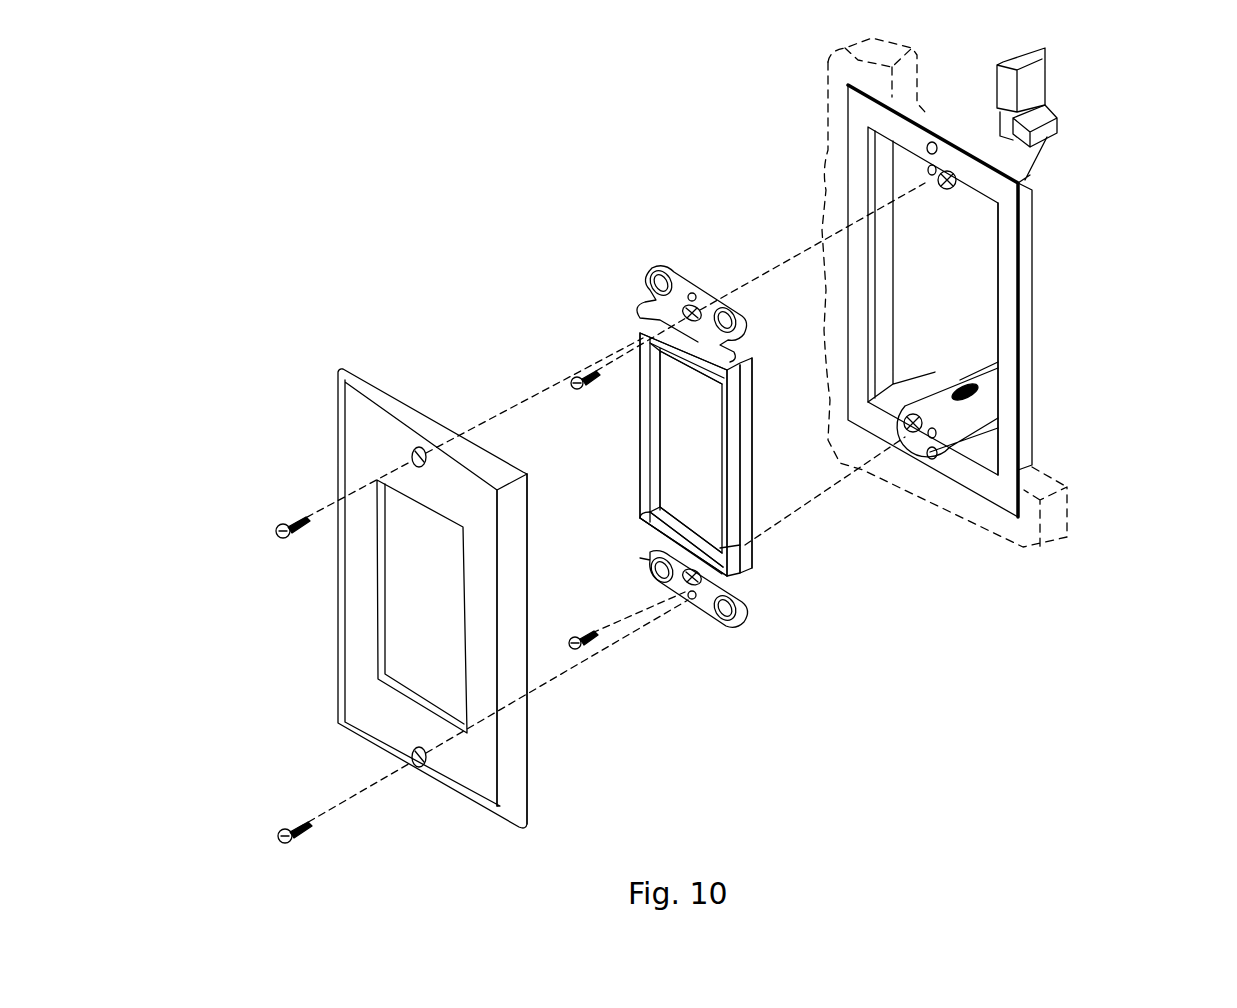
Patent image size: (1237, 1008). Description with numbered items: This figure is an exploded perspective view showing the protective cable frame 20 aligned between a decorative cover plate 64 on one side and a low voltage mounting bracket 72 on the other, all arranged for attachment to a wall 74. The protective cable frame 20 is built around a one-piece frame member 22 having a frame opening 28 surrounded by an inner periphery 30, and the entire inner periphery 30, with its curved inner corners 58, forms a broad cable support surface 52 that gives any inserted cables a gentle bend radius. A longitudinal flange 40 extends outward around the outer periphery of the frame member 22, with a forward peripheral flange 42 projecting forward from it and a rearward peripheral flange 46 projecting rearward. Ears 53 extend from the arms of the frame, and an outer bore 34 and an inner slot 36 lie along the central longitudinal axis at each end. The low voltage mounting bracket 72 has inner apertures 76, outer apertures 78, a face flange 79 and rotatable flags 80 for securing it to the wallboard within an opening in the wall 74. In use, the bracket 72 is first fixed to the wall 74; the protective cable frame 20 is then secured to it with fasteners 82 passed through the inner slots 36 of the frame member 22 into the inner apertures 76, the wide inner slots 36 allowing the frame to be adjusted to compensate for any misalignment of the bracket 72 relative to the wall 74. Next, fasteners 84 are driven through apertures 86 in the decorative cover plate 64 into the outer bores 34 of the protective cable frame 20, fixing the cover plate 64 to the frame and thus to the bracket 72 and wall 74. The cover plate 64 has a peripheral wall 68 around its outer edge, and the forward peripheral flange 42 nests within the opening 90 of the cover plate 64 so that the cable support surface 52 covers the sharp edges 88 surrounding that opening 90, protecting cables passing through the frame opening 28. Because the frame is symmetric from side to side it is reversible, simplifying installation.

The protective cable frame 20 is at (582, 309).
The frame member 22 is at (741, 346).
The frame opening 28 is at (685, 444).
The inner periphery 30 is at (690, 540).
The outer bore 34 is at (690, 293).
The inner slot 36 is at (683, 312).
The longitudinal flange 40 is at (742, 465).
The forward peripheral flange 42 is at (730, 477).
The rearward peripheral flange 46 is at (752, 420).
The cable support surface 52 is at (655, 403).
The ear 53 is at (654, 273).
The curved inner corner 58 is at (652, 513).
The decorative cover plate 64 is at (383, 384).
The peripheral wall 68 is at (518, 748).
The low voltage mounting bracket 72 is at (1040, 222).
The wall 74 is at (841, 80).
The inner aperture 76 is at (945, 191).
The outer aperture 78 is at (934, 142).
The face flange 79 is at (1010, 325).
The rotatable flag 80 is at (1048, 86).
The fastener 82 is at (585, 392).
The fastener 84 is at (294, 524).
The aperture 86 is at (423, 464).
The sharp edge 88 is at (376, 578).
The opening 90 is at (400, 625).